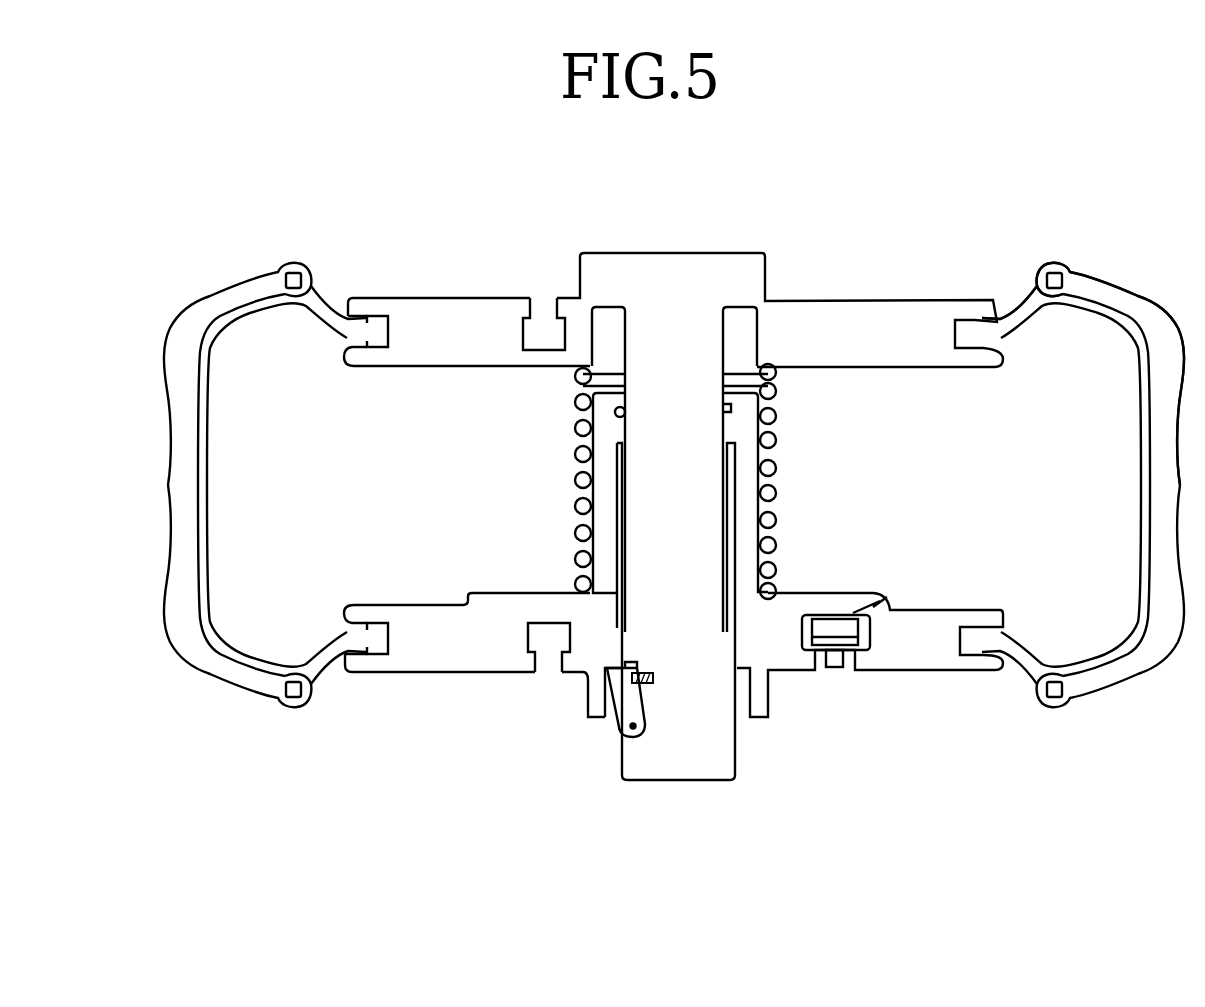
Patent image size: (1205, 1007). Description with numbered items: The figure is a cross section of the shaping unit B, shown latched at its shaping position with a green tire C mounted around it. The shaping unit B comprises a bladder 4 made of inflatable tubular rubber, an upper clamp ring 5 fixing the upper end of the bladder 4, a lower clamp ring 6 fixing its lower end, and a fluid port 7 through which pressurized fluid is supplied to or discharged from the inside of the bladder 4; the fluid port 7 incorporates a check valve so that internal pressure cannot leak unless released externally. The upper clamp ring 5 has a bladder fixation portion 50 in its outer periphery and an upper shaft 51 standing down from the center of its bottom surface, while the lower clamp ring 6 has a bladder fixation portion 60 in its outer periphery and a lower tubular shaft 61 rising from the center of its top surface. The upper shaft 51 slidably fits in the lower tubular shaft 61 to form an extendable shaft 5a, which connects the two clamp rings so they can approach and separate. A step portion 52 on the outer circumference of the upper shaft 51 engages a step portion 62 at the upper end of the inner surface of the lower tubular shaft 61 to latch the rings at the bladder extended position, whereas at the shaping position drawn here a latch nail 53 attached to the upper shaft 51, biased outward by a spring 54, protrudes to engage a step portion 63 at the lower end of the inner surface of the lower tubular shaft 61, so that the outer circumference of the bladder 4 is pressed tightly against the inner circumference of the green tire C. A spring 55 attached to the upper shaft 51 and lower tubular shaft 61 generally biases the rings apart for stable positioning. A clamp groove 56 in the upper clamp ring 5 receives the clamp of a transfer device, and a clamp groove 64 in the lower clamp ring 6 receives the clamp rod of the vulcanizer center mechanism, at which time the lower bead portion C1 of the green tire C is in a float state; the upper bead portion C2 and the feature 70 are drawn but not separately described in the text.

The shaping unit B is at (1049, 219).
The green tire C is at (183, 520).
The lower bead portion C1 is at (285, 697).
The upper bead core C2 is at (292, 270).
The bladder 4 is at (205, 500).
The upper clamp ring 5 is at (860, 315).
The extendable shaft 5a is at (865, 452).
The bladder fixation portion 50 is at (377, 327).
The upper shaft 51 is at (695, 452).
The step portion 52 is at (622, 622).
The latch nail 53 is at (623, 716).
The spring 54 is at (647, 683).
The spring 55 is at (572, 421).
The clamp groove 56 is at (545, 327).
The lower clamp ring 6 is at (430, 660).
The bladder fixation portion 60 is at (378, 647).
The lower tubular shaft 61 is at (748, 506).
The step portion 62 is at (618, 445).
The step portion 63 is at (620, 683).
The clamp groove 64 is at (548, 640).
The fluid port 7 is at (858, 613).
The clamp screw shank 70 is at (834, 657).